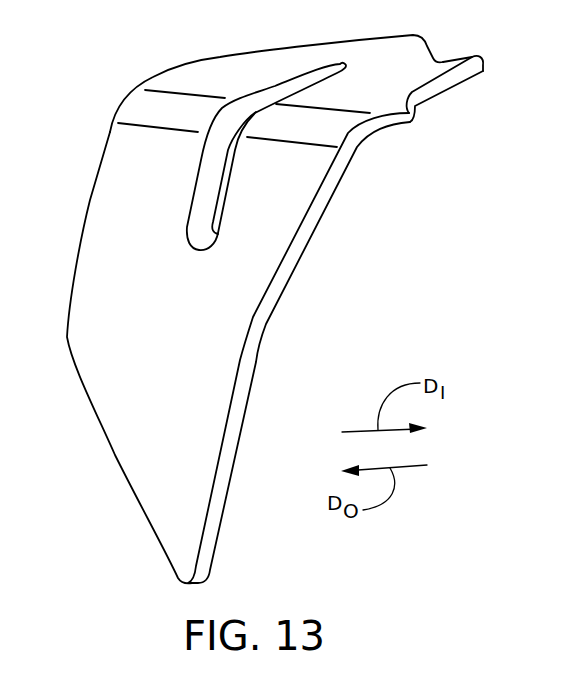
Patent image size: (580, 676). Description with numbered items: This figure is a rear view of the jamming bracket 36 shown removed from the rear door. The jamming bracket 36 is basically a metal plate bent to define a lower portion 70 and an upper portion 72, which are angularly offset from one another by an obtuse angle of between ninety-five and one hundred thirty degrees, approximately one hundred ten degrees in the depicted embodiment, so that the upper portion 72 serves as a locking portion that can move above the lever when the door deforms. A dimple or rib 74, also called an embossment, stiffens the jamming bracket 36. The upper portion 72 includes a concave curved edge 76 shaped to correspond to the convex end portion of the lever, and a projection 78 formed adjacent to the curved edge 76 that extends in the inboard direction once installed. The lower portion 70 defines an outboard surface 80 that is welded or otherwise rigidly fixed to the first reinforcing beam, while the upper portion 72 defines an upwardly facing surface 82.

The jamming bracket 36 is at (279, 291).
The lower portion 70 is at (197, 348).
The upper portion 72 is at (264, 72).
The dimple or rib 74 is at (209, 201).
The curved edge 76 is at (469, 73).
The projection 78 is at (451, 62).
The outboard surface 80 is at (143, 418).
The upwardly facing surface 82 is at (383, 55).